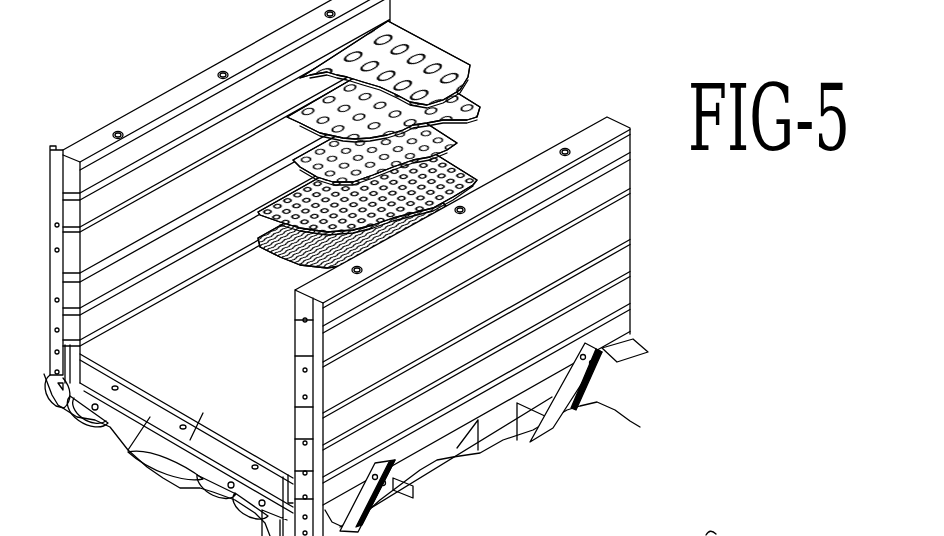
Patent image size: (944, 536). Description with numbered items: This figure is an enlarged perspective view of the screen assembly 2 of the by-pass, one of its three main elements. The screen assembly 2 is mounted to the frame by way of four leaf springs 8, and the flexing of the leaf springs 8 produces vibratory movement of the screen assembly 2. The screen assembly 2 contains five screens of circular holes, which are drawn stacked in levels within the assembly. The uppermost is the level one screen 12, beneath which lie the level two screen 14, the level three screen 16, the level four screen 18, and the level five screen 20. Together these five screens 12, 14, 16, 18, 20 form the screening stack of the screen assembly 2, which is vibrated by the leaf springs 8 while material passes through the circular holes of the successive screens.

The screen assembly 2 is at (380, 268).
The leaf spring 8 is at (569, 398).
The level one screen 12 is at (432, 43).
The level two screen 14 is at (473, 90).
The level three screen 16 is at (445, 140).
The level four screen 18 is at (462, 168).
The level five screen 20 is at (292, 262).